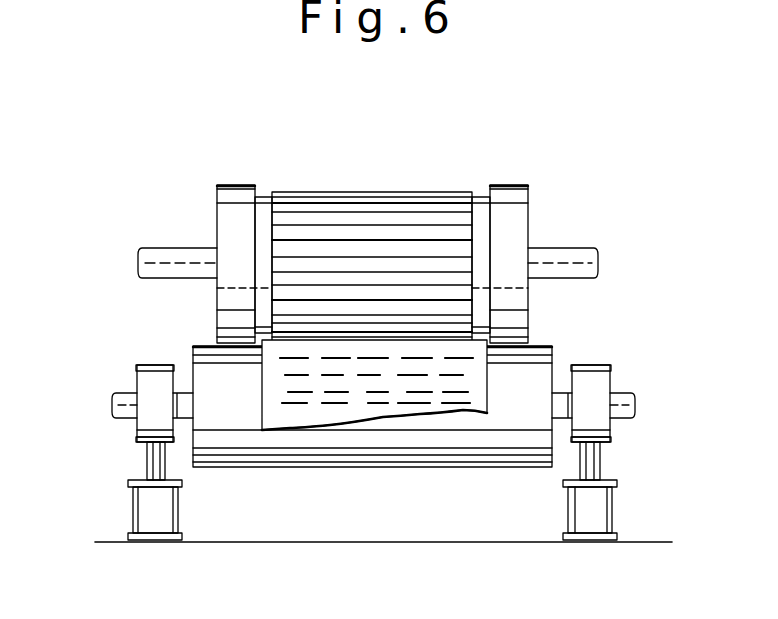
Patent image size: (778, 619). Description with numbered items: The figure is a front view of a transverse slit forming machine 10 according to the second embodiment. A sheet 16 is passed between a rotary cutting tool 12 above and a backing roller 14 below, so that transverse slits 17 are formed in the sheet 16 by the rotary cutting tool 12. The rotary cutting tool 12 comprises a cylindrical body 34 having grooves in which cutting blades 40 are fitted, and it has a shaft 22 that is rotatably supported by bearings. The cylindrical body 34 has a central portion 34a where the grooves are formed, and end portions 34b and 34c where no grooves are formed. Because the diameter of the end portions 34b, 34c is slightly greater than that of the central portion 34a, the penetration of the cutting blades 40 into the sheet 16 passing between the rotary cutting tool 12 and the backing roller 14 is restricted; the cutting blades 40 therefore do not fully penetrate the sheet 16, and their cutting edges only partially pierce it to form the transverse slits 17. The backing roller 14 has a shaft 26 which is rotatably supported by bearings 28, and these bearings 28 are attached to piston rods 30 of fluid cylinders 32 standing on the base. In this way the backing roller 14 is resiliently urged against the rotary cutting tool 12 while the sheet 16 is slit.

The transverse slit forming machine 10 is at (607, 148).
The rotary cutting tool 12 is at (452, 192).
The backing roller 14 is at (428, 468).
The sheet 16 is at (295, 412).
The transverse slits 17 is at (370, 378).
The shaft 22 is at (162, 258).
The shaft 26 is at (621, 397).
The bearings 28 is at (140, 380).
The piston rods 30 is at (147, 462).
The fluid cylinders 32 is at (135, 507).
The cylindrical body 34 is at (338, 248).
The central portion 34a is at (293, 197).
The end portion 34b is at (233, 210).
The end portion 34c is at (508, 208).
The cutting blades 40 is at (403, 223).